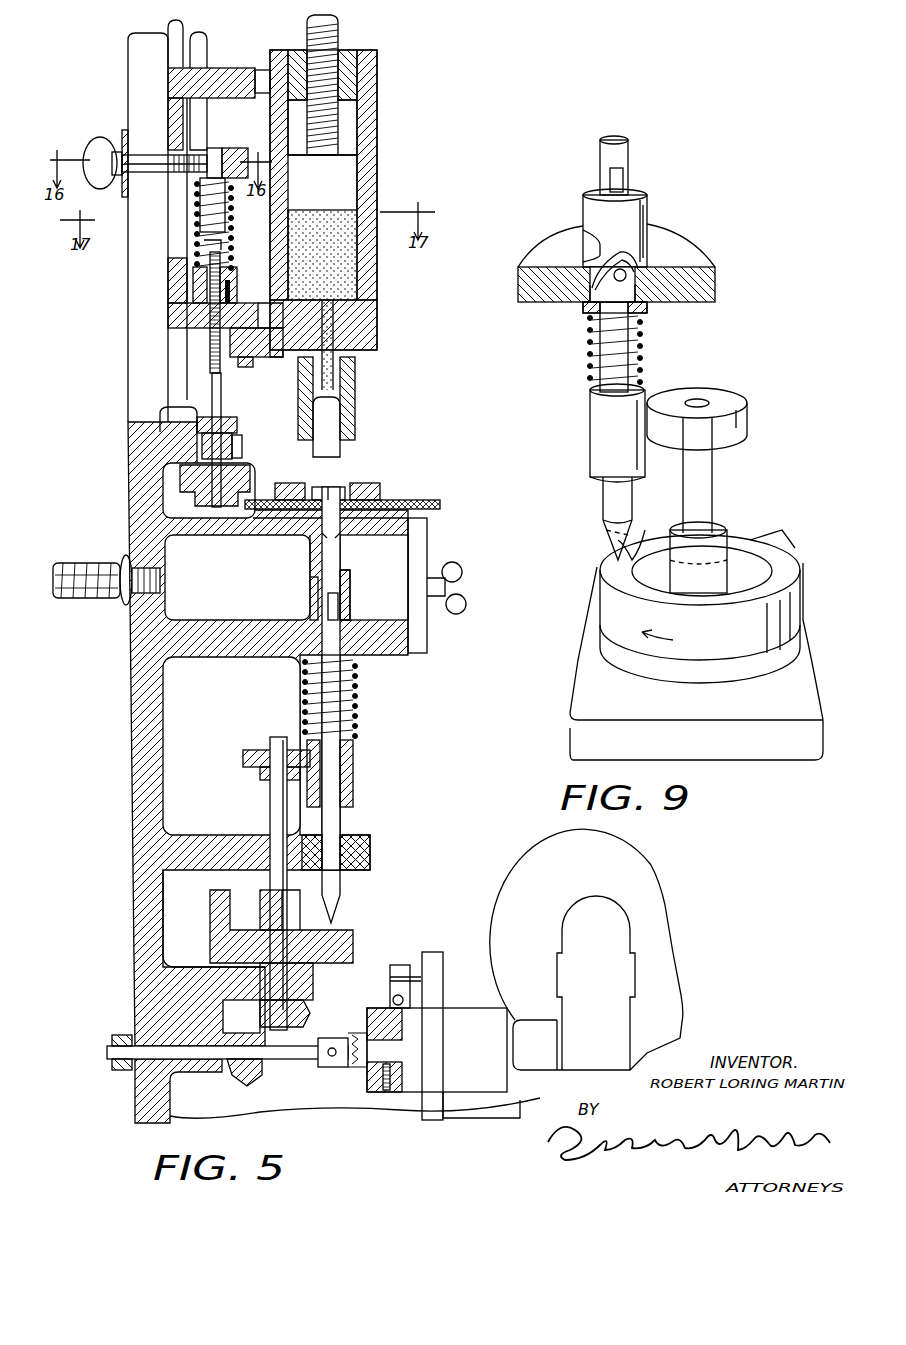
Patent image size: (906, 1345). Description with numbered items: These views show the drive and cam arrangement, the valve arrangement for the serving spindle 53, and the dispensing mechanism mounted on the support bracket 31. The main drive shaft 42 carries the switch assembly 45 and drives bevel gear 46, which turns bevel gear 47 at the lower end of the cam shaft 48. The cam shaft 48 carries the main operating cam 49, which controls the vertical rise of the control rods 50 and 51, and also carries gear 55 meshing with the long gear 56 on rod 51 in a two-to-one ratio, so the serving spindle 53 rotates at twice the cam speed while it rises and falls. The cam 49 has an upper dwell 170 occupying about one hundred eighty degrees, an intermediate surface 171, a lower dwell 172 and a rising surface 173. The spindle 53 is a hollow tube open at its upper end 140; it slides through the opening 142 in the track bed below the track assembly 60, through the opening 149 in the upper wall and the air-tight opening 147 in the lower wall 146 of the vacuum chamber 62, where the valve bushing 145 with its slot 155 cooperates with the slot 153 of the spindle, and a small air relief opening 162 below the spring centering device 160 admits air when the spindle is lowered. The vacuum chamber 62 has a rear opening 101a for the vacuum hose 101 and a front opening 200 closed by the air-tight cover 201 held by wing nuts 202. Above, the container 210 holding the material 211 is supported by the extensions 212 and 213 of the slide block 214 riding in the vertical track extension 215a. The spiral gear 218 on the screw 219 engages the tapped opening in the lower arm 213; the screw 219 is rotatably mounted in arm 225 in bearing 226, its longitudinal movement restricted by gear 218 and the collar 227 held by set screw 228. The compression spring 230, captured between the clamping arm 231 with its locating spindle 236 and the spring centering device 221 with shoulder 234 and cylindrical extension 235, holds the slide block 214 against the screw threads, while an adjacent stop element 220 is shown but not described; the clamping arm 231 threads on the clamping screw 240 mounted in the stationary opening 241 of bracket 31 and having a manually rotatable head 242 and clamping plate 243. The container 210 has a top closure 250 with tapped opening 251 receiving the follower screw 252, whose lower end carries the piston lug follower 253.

In FIG. 5, the support bracket 31 is at (146, 42).
In FIG. 5, the vertical track extension 215a is at (178, 40).
In FIG. 5, the slide block 214 is at (185, 80).
In FIG. 5, the extension of slide block 212 is at (230, 78).
In FIG. 5, the tapped opening 251 is at (314, 26).
In FIG. 5, the top closure 250 is at (377, 60).
In FIG. 5, the follower screw 252 is at (340, 128).
In FIG. 5, the piston lug follower 253 is at (350, 180).
In FIG. 5, the material 211 is at (350, 268).
In FIG. 5, the container 210 is at (370, 324).
In FIG. 5, the clamping plate 243 is at (124, 132).
In FIG. 5, the manually rotatable head 242 is at (105, 140).
In FIG. 5, the clamping screw 240 is at (142, 165).
In FIG. 5, the stationary opening 241 is at (164, 176).
In FIG. 5, the clamping arm 231 is at (246, 140).
In FIG. 5, the locating spindle 236 is at (205, 200).
In FIG. 5, the compression spring 230 is at (233, 212).
In FIG. 5, the cylindrical extension 235 is at (195, 285).
In FIG. 5, the shoulder 234 is at (195, 300).
In FIG. 5, the lower arm 213 is at (205, 312).
In FIG. 5, the air-tight cover 201 is at (200, 328).
In FIG. 5, the front opening 200 is at (200, 330).
In FIG. 5, the spring centering device 221 is at (225, 300).
In FIG. 5, the stop 220 is at (232, 288).
In FIG. 5, the screw 219 is at (224, 392).
In FIG. 5, the set screw 228 is at (197, 424).
In FIG. 5, the collar 227 is at (236, 424).
In FIG. 5, the arm 225 is at (240, 444).
In FIG. 5, the bearing 226 is at (242, 457).
In FIG. 5, the spiral gear 218 is at (250, 476).
In FIG. 5, the opening in track bed 142 is at (342, 485).
In FIG. 5, the track assembly 60 is at (401, 478).
In FIG. 5, the vacuum chamber 62 is at (427, 509).
In FIG. 5, the upper end of spindle 140 is at (320, 540).
In FIG. 9, the upper end of spindle 140 is at (614, 140).
In FIG. 5, the opening in upper wall 149 is at (345, 540).
In FIG. 5, the valve bushing 145 is at (350, 575).
In FIG. 9, the valve bushing 145 is at (644, 210).
In FIG. 5, the slot of valve bushing 155 is at (350, 598).
In FIG. 9, the slot of valve bushing 155 is at (590, 228).
In FIG. 5, the slot of spindle 153 is at (328, 608).
In FIG. 9, the slot of spindle 153 is at (622, 178).
In FIG. 5, the air-tight opening 147 is at (345, 625).
In FIG. 9, the air-tight opening 147 is at (590, 278).
In FIG. 5, the wing nuts 202 is at (458, 600).
In FIG. 5, the rear opening 101a is at (128, 558).
In FIG. 5, the vacuum hose 101 is at (88, 590).
In FIG. 5, the serving spindle 53 is at (345, 752).
In FIG. 9, the serving spindle 53 is at (630, 158).
In FIG. 5, the long gear 56 is at (350, 780).
In FIG. 9, the long gear 56 is at (598, 420).
In FIG. 5, the gear 55 is at (255, 750).
In FIG. 9, the gear 55 is at (724, 390).
In FIG. 5, the connecting rod 51 is at (338, 905).
In FIG. 5, the main operating cam 49 is at (350, 940).
In FIG. 9, the main operating cam 49 is at (600, 590).
In FIG. 5, the cam shaft 48 is at (285, 988).
In FIG. 5, the bevel gear 47 is at (296, 1020).
In FIG. 5, the main drive shaft 42 is at (306, 1060).
In FIG. 5, the bevel gear 46 is at (236, 1080).
In FIG. 5, the switch assembly 45 is at (400, 967).
In FIG. 9, the air relief opening 162 is at (628, 265).
In FIG. 9, the lower wall of vacuum chamber 146 is at (535, 256).
In FIG. 9, the spring centering device 160 is at (648, 312).
In FIG. 9, the control rod 50 is at (608, 500).
In FIG. 9, the rising surface 173 is at (632, 545).
In FIG. 9, the lower dwell 172 is at (665, 560).
In FIG. 9, the intermediate dwell 171 is at (745, 545).
In FIG. 9, the upper dwell 170 is at (640, 604).